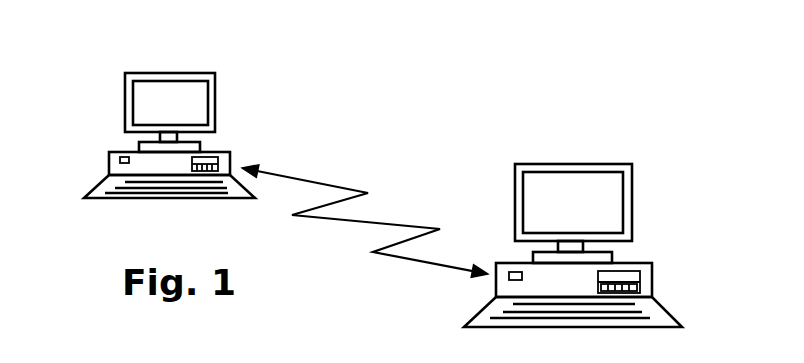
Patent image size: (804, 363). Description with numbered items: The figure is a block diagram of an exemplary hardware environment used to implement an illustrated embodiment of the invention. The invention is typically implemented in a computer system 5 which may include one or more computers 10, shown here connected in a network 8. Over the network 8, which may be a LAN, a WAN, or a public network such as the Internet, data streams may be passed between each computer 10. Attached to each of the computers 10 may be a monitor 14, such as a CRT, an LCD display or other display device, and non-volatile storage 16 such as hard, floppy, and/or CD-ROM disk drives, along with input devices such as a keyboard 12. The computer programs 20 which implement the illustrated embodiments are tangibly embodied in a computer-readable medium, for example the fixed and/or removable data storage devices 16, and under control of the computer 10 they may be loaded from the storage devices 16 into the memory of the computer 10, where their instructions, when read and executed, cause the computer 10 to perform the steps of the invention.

The computer system 5 is at (460, 99).
The network 8 is at (347, 220).
The computer 10 is at (377, 193).
The keyboard 12 is at (652, 313).
The monitor 14 is at (583, 178).
The non-volatile storage 16 is at (632, 275).
The computer programs 20 is at (120, 170).